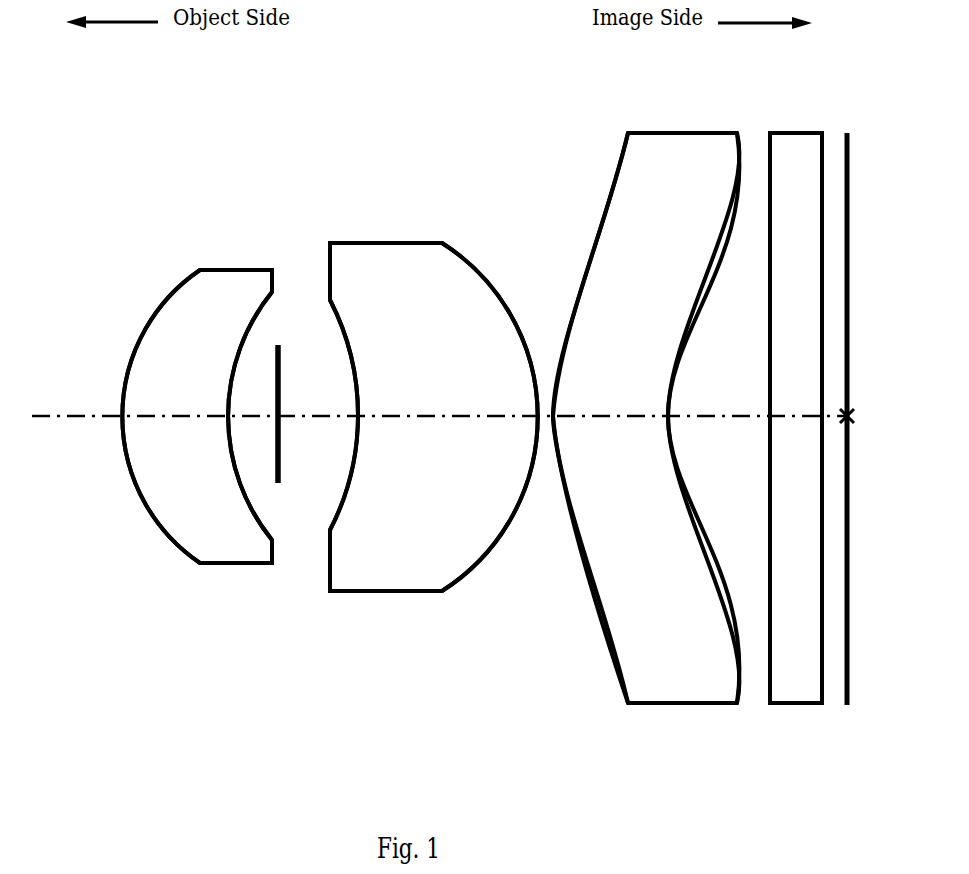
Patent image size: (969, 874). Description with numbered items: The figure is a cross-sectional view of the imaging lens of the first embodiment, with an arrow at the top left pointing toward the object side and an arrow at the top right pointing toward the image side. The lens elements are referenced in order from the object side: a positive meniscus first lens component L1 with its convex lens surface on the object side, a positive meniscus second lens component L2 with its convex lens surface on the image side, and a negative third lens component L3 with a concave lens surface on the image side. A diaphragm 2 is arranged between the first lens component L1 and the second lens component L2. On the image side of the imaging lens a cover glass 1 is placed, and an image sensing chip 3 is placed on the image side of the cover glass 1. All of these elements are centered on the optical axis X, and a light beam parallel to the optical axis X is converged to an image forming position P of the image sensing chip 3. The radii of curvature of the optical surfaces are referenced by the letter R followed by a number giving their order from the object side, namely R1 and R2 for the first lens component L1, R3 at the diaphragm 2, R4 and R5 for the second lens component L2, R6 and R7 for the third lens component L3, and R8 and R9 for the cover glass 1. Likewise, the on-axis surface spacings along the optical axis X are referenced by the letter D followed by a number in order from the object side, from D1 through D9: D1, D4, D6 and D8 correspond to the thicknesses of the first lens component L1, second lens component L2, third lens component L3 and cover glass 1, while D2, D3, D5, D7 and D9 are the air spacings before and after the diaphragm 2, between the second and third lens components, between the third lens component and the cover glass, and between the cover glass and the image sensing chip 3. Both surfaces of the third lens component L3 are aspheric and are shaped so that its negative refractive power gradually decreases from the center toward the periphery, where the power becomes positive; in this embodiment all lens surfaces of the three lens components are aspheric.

The first lens component L1 is at (234, 284).
The second lens component L2 is at (393, 254).
The third lens component L3 is at (684, 146).
The cover glass 1 is at (796, 706).
The diaphragm 2 is at (282, 446).
The image sensing chip 3 is at (845, 707).
The image forming position P is at (866, 420).
The optical axis X is at (77, 428).
The radius of curvature of first surface R1 is at (138, 494).
The radius of curvature of second surface R2 is at (248, 497).
The radius of curvature of third surface R3 is at (281, 353).
The radius of curvature of fourth surface R4 is at (345, 340).
The radius of curvature of fifth surface R5 is at (508, 518).
The radius of curvature of sixth surface R6 is at (592, 628).
The radius of curvature of seventh surface R7 is at (690, 497).
The radius of curvature of eighth surface R8 is at (768, 376).
The radius of curvature of ninth surface R9 is at (823, 151).
The first on-axis surface spacing D1 is at (177, 418).
The second on-axis surface spacing D2 is at (244, 418).
The third on-axis surface spacing D3 is at (318, 418).
The fourth on-axis surface spacing D4 is at (434, 418).
The fifth on-axis surface spacing D5 is at (544, 413).
The sixth on-axis surface spacing D6 is at (603, 420).
The seventh on-axis surface spacing D7 is at (712, 419).
The eighth on-axis surface spacing D8 is at (793, 419).
The ninth on-axis surface spacing D9 is at (836, 424).